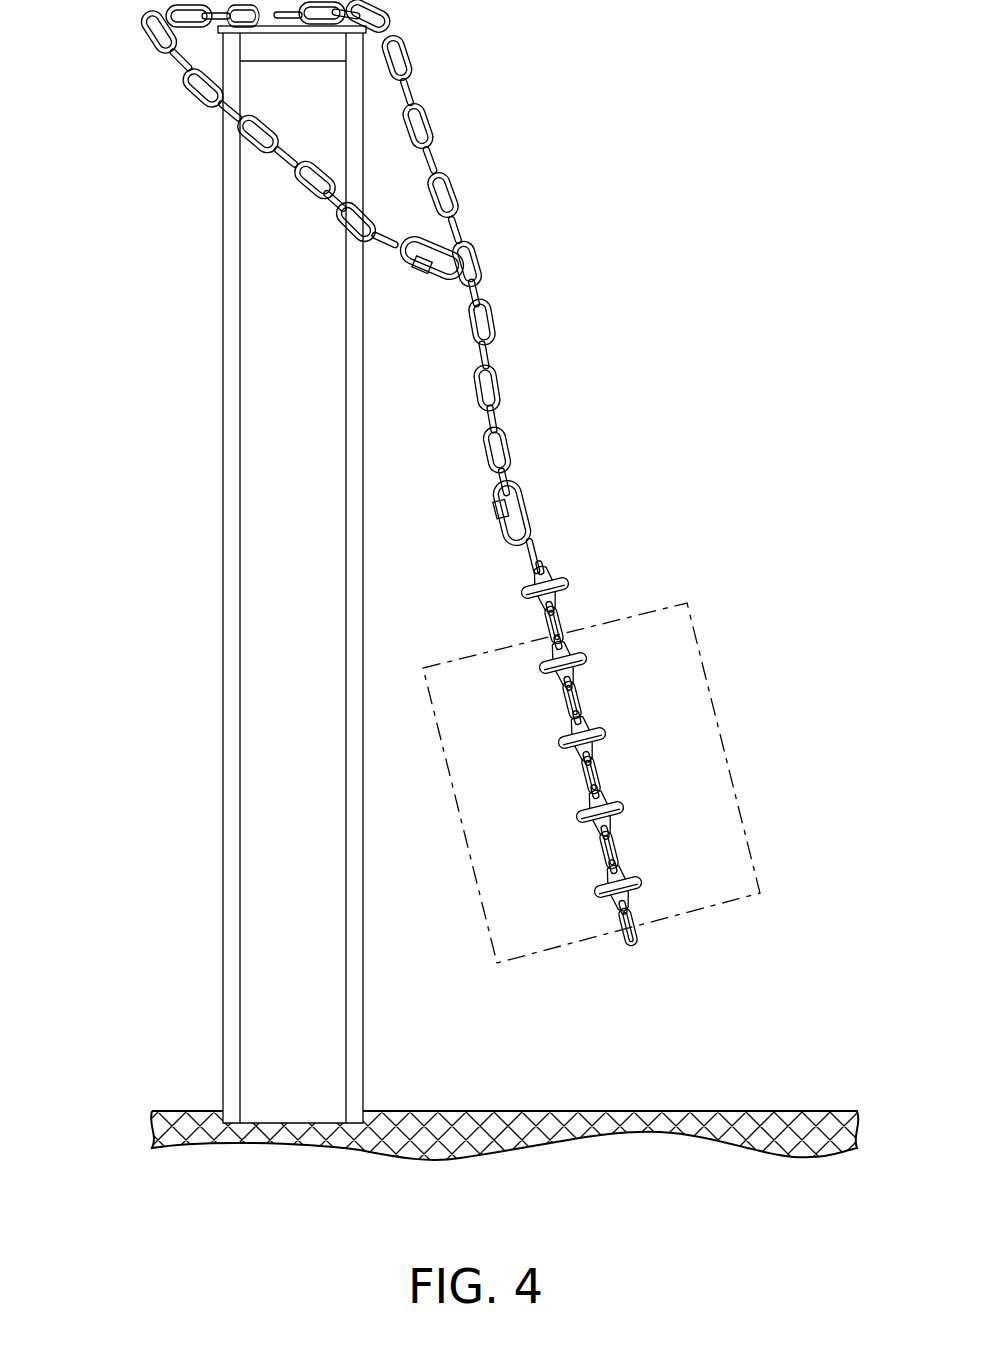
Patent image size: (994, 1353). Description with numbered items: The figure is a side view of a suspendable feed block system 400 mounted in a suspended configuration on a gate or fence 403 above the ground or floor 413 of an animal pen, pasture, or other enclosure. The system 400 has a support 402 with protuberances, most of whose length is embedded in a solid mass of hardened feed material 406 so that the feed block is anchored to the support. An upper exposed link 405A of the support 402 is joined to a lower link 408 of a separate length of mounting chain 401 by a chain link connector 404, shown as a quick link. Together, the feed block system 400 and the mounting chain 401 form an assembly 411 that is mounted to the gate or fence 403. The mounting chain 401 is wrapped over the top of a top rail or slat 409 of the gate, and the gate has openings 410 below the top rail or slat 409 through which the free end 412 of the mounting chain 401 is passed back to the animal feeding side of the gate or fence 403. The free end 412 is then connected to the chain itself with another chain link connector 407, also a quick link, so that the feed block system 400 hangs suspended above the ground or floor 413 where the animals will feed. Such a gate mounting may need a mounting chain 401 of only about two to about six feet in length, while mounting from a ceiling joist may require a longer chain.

The suspendable feed block system 400 is at (614, 730).
The mounting chain 401 is at (541, 406).
The support with protuberances 402 is at (581, 695).
The gate or fence 403 is at (212, 321).
The chain link connector 404 is at (527, 508).
The upper exposed link 405A is at (537, 550).
The hardened feed material 406 is at (560, 927).
The chain link connector 407 is at (440, 278).
The lower link 408 is at (508, 474).
The top rail or slat 409 is at (273, 61).
The openings 410 is at (250, 160).
The assembly 411 is at (433, 95).
The free end 412 is at (401, 251).
The ground or floor 413 is at (745, 1110).